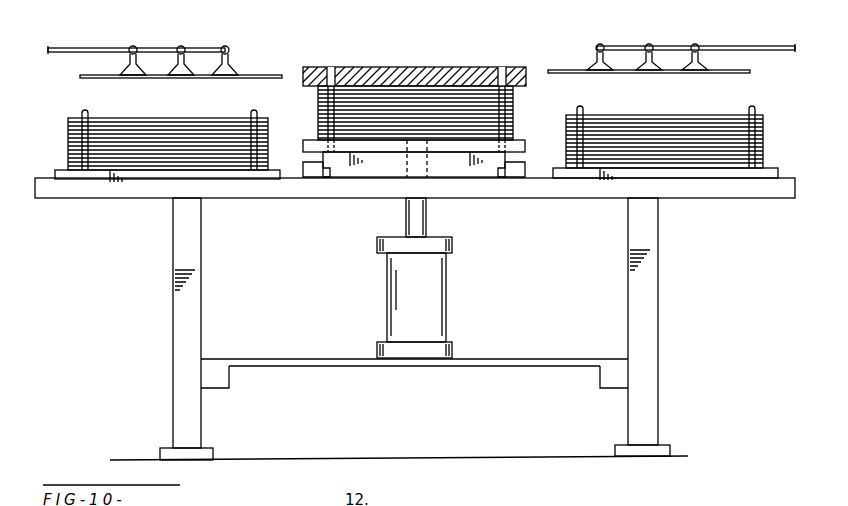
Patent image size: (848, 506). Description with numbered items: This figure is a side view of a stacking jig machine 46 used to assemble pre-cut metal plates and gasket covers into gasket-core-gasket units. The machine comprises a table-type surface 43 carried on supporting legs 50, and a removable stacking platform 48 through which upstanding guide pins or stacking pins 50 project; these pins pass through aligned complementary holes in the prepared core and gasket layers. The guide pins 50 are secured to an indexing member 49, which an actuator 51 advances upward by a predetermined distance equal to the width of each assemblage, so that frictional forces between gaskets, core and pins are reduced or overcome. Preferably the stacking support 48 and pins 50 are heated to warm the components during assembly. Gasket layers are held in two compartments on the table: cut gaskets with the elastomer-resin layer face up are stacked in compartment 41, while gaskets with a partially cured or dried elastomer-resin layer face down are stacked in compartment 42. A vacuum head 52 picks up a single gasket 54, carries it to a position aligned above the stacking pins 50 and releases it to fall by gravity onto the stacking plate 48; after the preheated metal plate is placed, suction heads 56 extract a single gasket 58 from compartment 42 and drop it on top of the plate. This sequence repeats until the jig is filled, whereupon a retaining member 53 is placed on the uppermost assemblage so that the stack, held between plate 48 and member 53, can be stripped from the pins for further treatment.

The compartment 41 is at (70, 143).
The compartment 42 is at (763, 133).
The table-type surface 43 is at (737, 185).
The stacking jig machine 46 is at (690, 244).
The removable stacking platform 48 is at (455, 150).
The indexing member 49 is at (443, 177).
The guide pins 50 is at (318, 94).
The actuator 51 is at (430, 322).
The vacuum head 52 is at (649, 44).
The retaining member 53 is at (463, 67).
The gasket 54 is at (733, 73).
The suction heads 56 is at (138, 47).
The gasket 58 is at (106, 78).